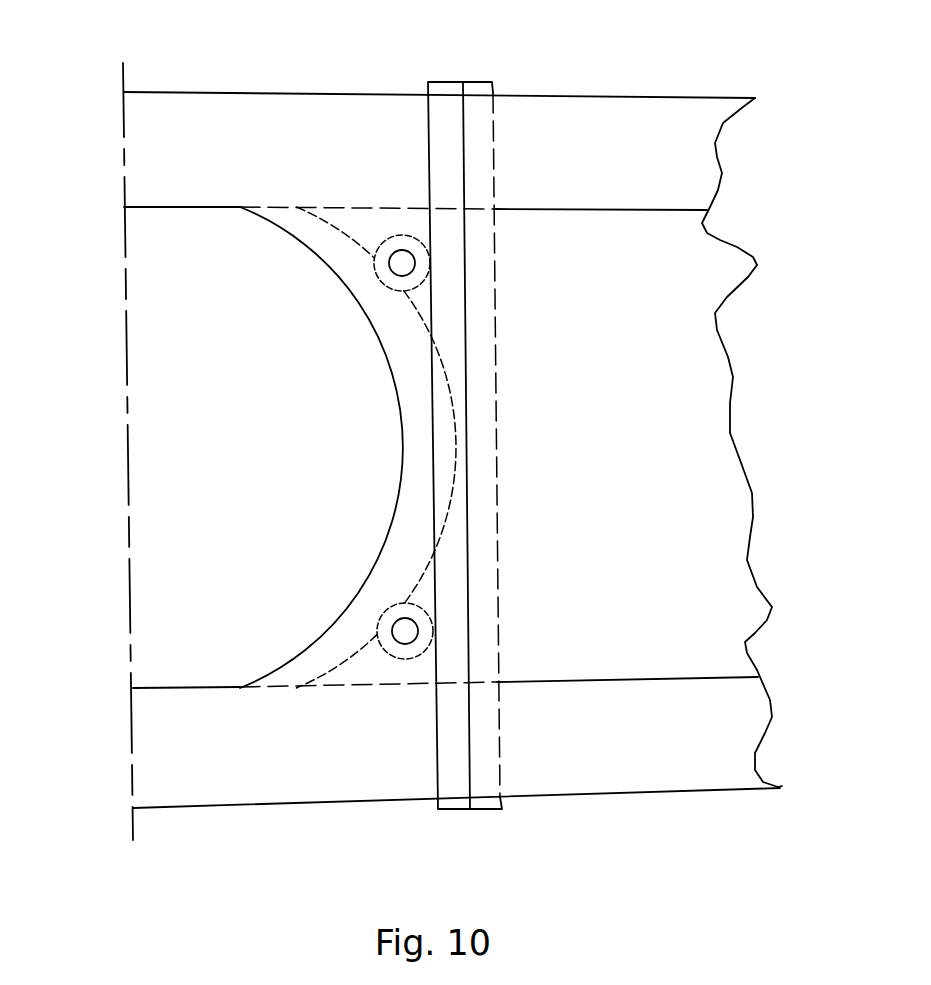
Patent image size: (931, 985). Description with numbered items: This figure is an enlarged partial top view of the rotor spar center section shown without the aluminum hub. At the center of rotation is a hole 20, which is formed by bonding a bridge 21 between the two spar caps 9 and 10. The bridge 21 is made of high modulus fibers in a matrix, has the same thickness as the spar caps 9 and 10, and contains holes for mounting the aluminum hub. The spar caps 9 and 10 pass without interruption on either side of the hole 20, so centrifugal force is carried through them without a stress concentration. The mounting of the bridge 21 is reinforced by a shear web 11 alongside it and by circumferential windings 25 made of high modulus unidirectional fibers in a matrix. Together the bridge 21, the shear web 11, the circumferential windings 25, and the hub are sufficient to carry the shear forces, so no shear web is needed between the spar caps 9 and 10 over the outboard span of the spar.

The spar cap 9 is at (627, 120).
The spar cap 10 is at (706, 757).
The shear web 11 is at (720, 658).
The hole 20 is at (200, 642).
The bridge 21 is at (376, 668).
The circumferential windings 25 is at (470, 809).